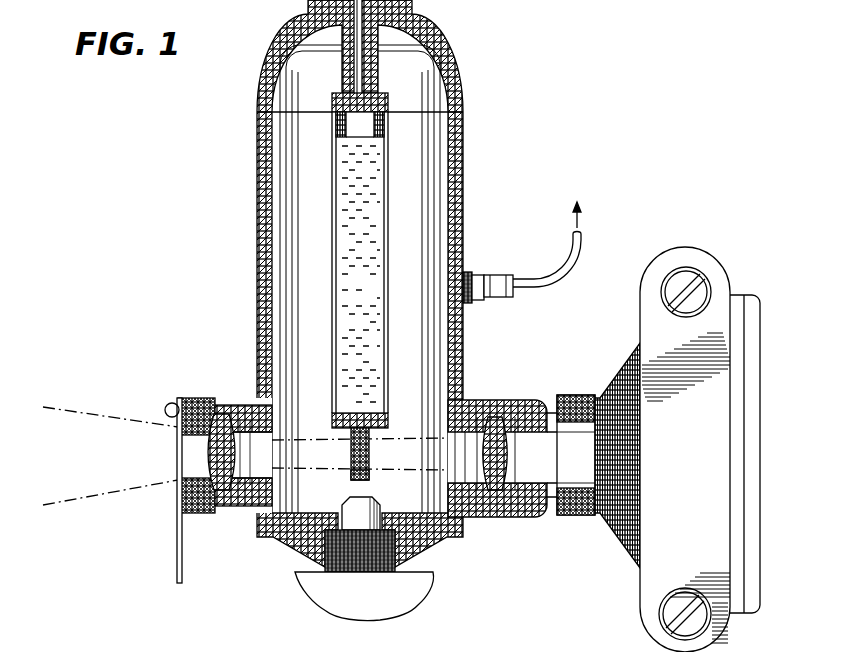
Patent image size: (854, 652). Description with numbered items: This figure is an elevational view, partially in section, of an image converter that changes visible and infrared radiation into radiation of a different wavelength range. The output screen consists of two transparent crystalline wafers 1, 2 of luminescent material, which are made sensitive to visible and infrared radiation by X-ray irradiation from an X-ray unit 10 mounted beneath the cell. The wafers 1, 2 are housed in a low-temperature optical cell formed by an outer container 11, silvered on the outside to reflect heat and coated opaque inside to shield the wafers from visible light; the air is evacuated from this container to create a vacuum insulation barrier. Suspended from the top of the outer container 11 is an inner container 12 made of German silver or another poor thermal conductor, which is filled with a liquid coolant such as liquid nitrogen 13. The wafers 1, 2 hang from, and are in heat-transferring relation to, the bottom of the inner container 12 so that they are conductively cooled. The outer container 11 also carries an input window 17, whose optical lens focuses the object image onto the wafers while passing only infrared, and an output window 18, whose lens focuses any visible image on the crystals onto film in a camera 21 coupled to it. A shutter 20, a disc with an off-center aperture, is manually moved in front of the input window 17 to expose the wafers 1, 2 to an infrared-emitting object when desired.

The crystalline wafer 1 is at (350, 472).
The crystalline wafer 2 is at (372, 472).
The X-ray unit 10 is at (435, 582).
The outer container 11 is at (257, 268).
The inner container 12 is at (388, 270).
The liquid nitrogen 13 is at (361, 274).
The input window 17 is at (218, 514).
The output window 18 is at (497, 518).
The shutter 20 is at (183, 568).
The camera 21 is at (640, 591).